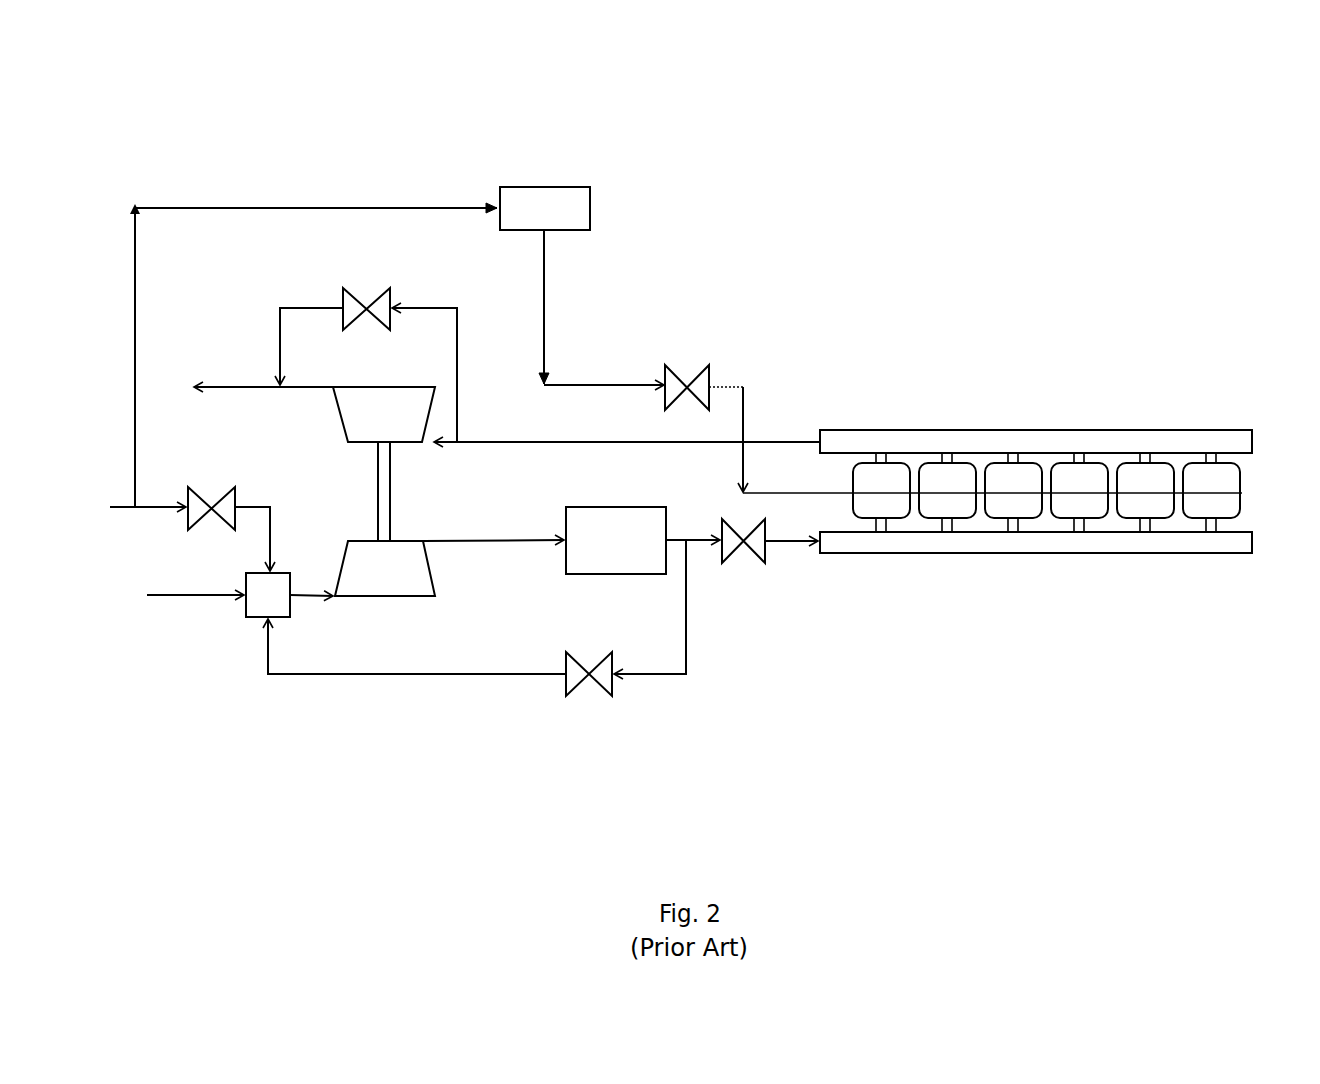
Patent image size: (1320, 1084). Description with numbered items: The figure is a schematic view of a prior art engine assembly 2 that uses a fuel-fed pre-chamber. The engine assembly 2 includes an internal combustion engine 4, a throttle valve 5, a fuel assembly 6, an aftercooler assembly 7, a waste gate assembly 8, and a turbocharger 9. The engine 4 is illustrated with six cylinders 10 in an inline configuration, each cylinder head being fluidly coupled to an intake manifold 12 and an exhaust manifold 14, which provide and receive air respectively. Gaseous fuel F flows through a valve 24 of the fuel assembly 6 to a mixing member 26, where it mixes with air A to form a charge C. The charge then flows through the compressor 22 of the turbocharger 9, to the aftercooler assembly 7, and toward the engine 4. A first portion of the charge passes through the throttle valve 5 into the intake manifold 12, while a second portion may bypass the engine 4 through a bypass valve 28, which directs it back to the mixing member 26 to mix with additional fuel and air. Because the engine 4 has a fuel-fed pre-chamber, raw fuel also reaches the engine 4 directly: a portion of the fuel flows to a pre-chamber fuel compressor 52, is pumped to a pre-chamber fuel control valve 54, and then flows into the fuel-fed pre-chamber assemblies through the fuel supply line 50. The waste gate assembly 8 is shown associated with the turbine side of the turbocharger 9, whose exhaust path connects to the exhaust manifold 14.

The engine assembly 2 is at (983, 153).
The internal combustion engine 4 is at (1045, 327).
The throttle valve 5 is at (738, 556).
The fuel assembly 6 is at (277, 506).
The aftercooler assembly 7 is at (557, 578).
The waste gate assembly 8 is at (367, 286).
The turbocharger 9 is at (410, 487).
The cylinders 10 is at (1253, 484).
The intake manifold 12 is at (1072, 560).
The exhaust manifold 14 is at (1149, 414).
The compressor 22 is at (378, 601).
The valve 24 is at (212, 484).
The mixing member 26 is at (236, 619).
The bypass valve 28 is at (593, 684).
The fuel supply line 50 is at (826, 498).
The pre-chamber fuel compressor 52 is at (591, 208).
The pre-chamber fuel control valve 54 is at (687, 363).